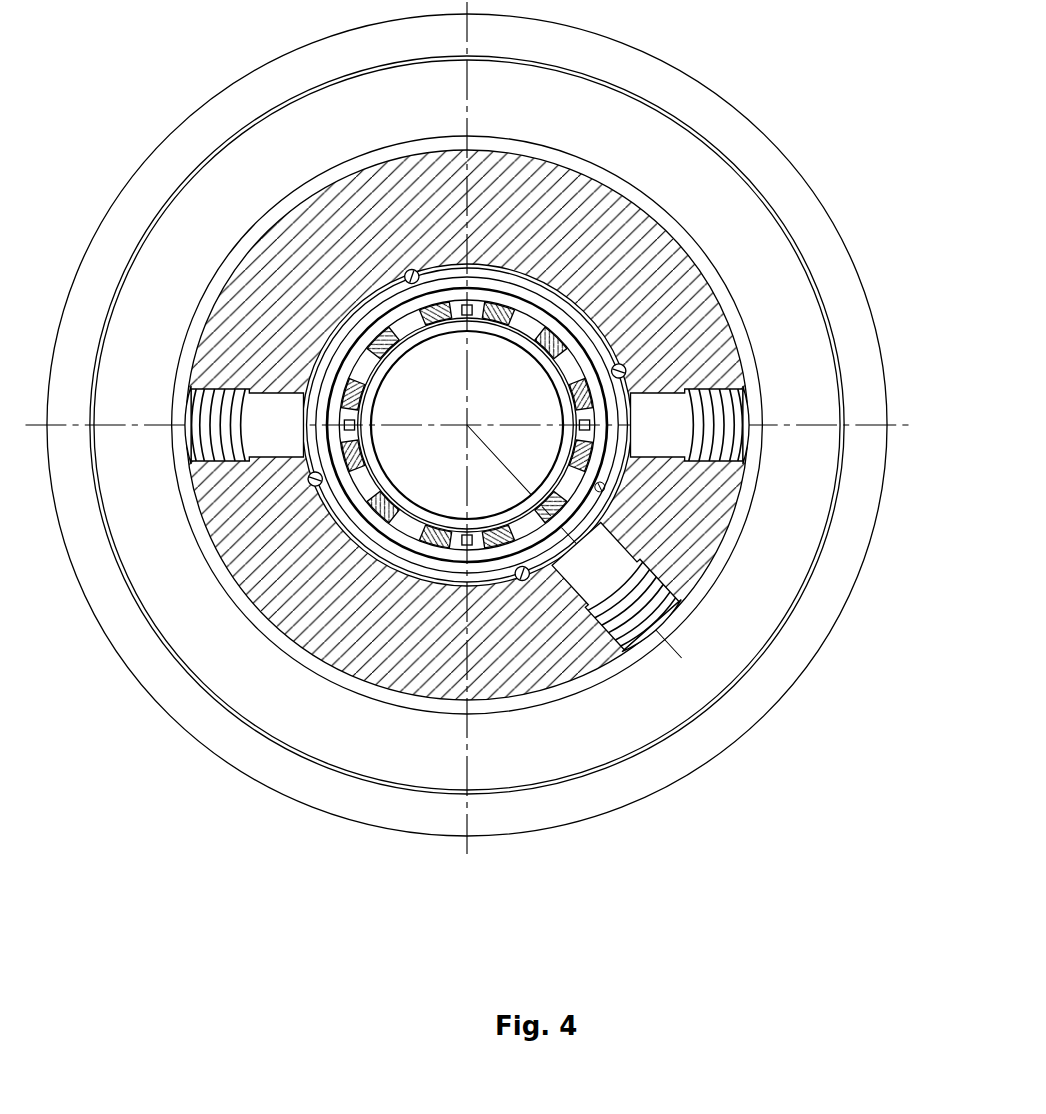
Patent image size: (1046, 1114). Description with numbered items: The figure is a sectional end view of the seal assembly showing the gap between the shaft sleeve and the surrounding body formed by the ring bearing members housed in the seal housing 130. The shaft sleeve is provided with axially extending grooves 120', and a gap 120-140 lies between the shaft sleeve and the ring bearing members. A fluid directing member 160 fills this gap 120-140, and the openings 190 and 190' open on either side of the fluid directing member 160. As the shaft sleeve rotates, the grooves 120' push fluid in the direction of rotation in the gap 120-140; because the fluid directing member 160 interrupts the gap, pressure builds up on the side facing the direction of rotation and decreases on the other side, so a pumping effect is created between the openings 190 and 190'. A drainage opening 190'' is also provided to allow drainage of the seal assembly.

The seal housing 130 is at (154, 150).
The fluid directing member 160 is at (580, 500).
The gap 120-140 is at (397, 537).
The axially extending grooves 120' is at (348, 523).
The opening 190 is at (637, 701).
The opening 190' is at (705, 241).
The drainage opening 190'' is at (168, 321).